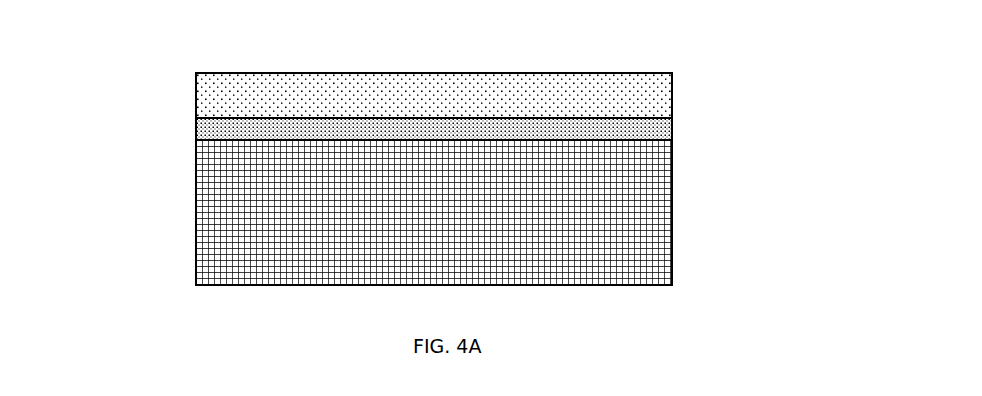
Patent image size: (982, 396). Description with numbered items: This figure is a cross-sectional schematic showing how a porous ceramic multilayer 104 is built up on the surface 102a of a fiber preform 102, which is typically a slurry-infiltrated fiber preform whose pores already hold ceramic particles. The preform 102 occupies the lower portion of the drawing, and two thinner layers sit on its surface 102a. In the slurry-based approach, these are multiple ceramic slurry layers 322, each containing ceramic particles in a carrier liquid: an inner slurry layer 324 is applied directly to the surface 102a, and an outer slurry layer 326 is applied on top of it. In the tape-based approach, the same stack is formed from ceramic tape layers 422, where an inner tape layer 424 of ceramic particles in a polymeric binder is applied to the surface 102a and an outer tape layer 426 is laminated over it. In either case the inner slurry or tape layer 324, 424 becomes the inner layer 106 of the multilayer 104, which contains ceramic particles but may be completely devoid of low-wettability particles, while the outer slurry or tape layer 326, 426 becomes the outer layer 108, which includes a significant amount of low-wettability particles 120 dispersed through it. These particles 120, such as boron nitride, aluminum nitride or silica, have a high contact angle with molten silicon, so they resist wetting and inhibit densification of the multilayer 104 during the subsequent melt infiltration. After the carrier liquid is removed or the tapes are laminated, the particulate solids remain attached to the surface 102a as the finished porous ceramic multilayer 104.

The fiber preform 102 is at (196, 251).
The surface 102a is at (196, 142).
The inner slurry layer 324 is at (196, 128).
The inner layer 106 is at (382, 119).
The inner tape layer 424 is at (403, 119).
The outer slurry layer 326 is at (196, 85).
The outer layer 108 is at (382, 86).
The outer tape layer 426 is at (403, 86).
The low-wettability particles 120 is at (350, 93).
The ceramic slurry layers 322 is at (677, 73).
The porous ceramic multilayer 104 is at (490, 106).
The ceramic tape layers 422 is at (510, 106).